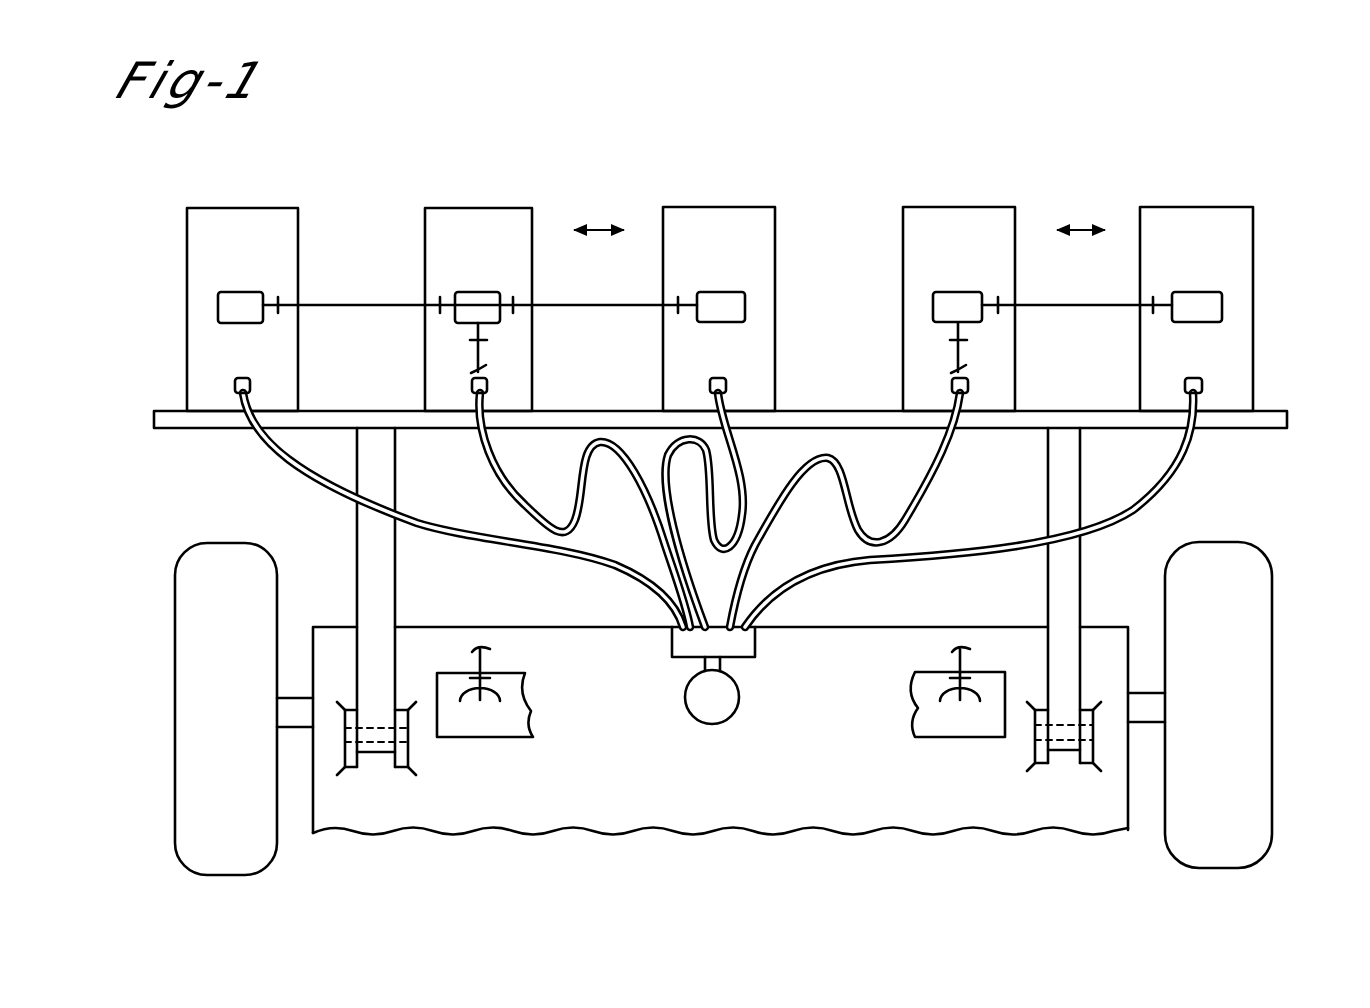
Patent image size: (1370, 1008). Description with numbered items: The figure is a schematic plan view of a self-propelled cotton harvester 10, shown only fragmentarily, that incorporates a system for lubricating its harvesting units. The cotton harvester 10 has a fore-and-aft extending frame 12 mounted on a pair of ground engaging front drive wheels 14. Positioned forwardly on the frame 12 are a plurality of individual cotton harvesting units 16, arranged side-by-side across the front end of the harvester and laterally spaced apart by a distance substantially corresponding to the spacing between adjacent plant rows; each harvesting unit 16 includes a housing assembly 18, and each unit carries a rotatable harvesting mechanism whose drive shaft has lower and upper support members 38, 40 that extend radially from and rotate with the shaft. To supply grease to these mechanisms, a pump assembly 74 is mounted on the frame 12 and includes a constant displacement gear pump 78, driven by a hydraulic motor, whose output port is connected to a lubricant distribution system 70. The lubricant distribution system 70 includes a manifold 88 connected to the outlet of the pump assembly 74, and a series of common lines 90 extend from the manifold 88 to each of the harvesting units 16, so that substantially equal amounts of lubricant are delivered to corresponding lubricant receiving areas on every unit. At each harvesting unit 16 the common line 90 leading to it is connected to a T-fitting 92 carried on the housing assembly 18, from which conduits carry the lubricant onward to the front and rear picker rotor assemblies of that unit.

The cotton harvester 10 is at (133, 580).
The frame 12 is at (707, 812).
The front drive wheels 14 is at (183, 778).
The cotton harvesting units 16 is at (248, 206).
The housing assembly 18 is at (232, 433).
The lower support member 38 is at (458, 430).
The upper support member 40 is at (996, 430).
The lubricant distribution system 70 is at (731, 480).
The pump assembly 74 is at (687, 724).
The constant displacement gear pump 78 is at (685, 690).
The manifold 88 is at (755, 645).
The common lines 90 is at (497, 473).
The T-fitting 92 is at (250, 382).